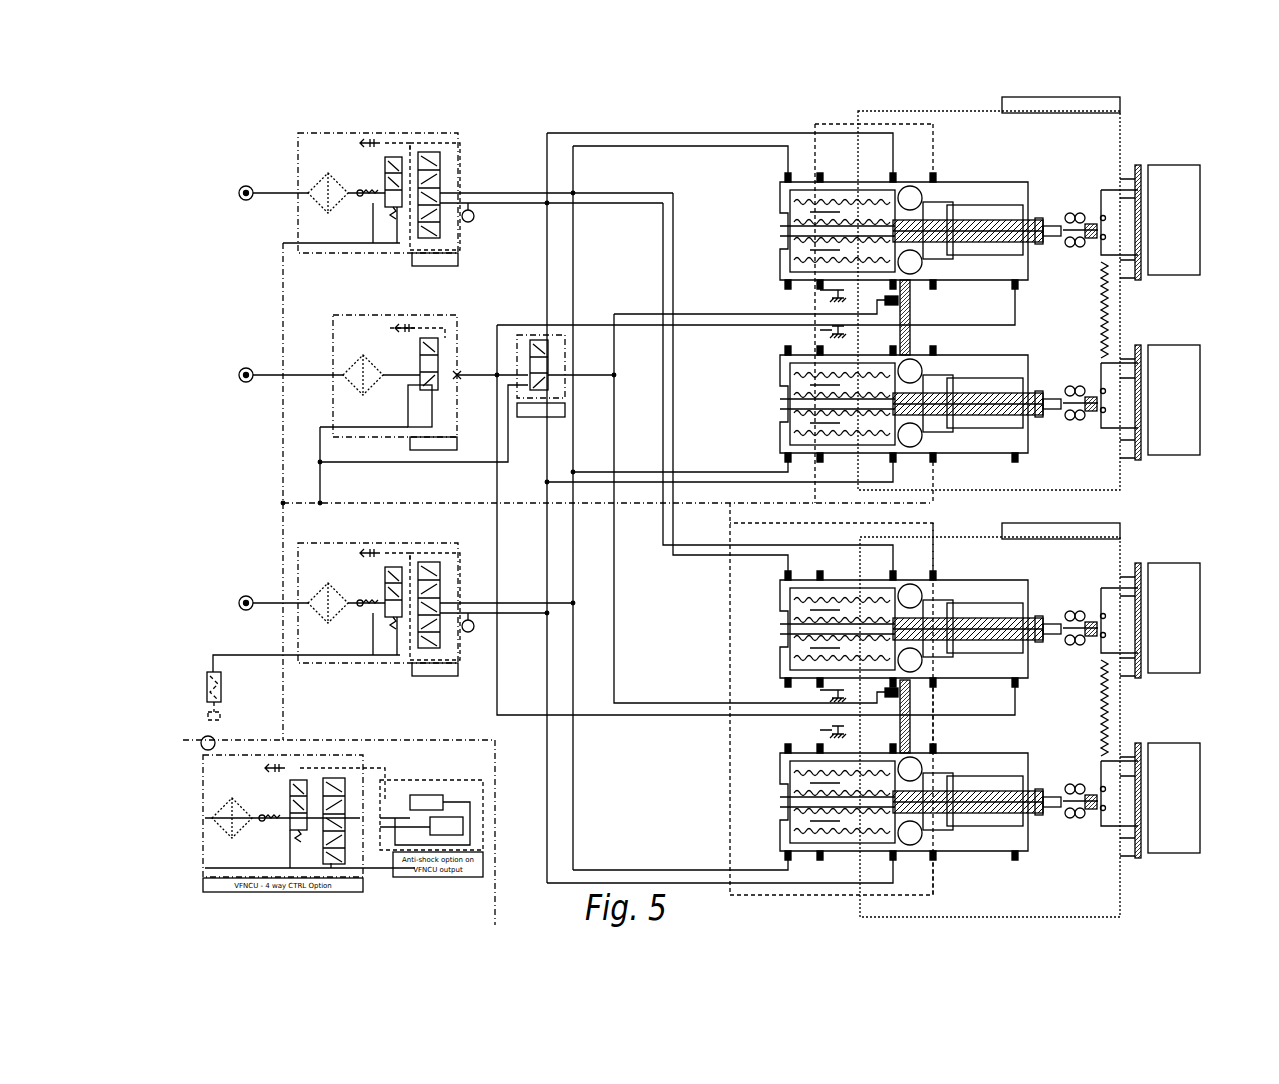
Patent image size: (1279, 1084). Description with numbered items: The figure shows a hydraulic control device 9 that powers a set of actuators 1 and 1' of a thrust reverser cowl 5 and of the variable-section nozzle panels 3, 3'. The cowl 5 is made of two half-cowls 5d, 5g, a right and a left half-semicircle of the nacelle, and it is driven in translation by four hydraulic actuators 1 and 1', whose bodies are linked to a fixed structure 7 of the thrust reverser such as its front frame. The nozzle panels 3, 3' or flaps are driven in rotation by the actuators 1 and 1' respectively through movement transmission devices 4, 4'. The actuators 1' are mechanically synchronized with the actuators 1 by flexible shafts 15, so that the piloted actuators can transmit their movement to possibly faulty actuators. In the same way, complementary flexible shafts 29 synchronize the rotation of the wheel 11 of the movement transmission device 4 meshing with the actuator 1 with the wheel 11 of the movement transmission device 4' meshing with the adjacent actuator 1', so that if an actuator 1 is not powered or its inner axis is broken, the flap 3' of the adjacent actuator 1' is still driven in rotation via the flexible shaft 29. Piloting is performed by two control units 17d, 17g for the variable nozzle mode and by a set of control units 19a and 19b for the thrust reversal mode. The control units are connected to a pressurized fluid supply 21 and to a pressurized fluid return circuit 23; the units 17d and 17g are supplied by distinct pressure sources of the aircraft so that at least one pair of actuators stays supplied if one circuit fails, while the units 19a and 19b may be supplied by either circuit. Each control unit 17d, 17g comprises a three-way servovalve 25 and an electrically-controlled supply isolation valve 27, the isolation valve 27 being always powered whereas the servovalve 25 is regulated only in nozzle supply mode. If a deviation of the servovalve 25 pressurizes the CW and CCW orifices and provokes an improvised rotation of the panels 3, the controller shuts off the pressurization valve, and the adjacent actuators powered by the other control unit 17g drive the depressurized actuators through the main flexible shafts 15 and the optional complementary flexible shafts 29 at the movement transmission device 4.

The actuator 1 is at (925, 417).
The actuator 1' is at (928, 592).
The variable-section nozzle panel 3 is at (1182, 421).
The variable-section nozzle panel 3' is at (1187, 601).
The movement transmission device 4 is at (1074, 407).
The movement transmission device 4' is at (1074, 579).
The thrust reverser cowl 5 is at (936, 104).
The right half-cowl 5d is at (955, 112).
The left half-cowl 5g is at (995, 539).
The fixed structure 7 is at (826, 333).
The hydraulic control device 9 is at (252, 124).
The wheel 11 is at (1093, 238).
The flexible shaft 15 is at (911, 320).
The control unit 17d is at (300, 134).
The control unit 17g is at (318, 664).
The control unit 19a is at (344, 314).
The control unit 19b is at (532, 336).
The pressurized fluid supply 21 is at (244, 186).
The pressurized fluid return circuit 23 is at (283, 312).
The three-way servovalve 25 is at (430, 152).
The electrically-controlled supply isolation valve 27 is at (388, 156).
The complementary flexible shaft 29 is at (1109, 305).